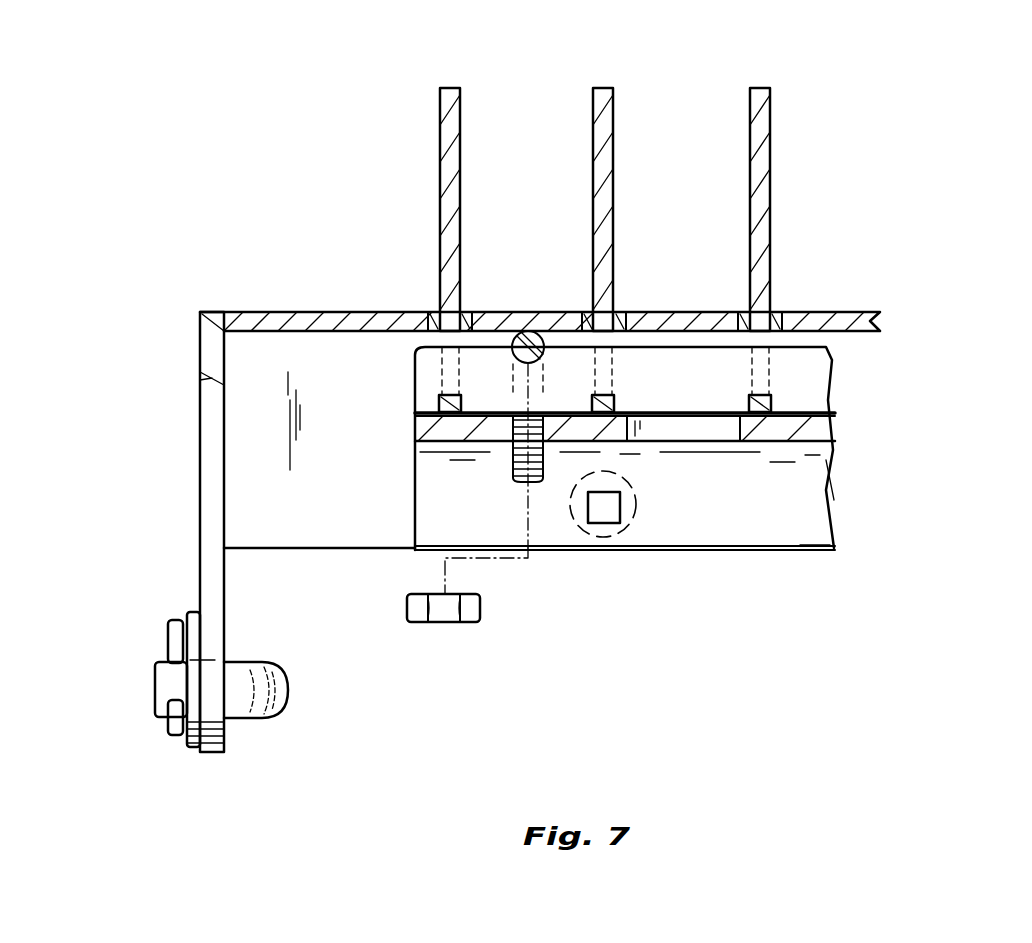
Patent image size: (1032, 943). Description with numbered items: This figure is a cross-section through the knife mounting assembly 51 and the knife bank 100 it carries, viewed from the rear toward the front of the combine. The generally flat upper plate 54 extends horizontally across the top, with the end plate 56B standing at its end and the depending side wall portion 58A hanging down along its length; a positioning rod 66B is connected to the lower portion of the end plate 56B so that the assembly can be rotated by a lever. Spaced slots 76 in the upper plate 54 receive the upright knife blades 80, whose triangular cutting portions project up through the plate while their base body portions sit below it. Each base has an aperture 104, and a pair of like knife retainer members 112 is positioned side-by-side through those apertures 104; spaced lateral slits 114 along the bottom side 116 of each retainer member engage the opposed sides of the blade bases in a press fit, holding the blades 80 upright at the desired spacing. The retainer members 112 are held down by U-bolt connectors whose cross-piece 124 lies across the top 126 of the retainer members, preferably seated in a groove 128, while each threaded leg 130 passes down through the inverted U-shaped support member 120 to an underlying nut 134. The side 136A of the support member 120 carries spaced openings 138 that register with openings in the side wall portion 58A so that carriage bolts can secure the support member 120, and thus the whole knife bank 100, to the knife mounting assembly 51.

The knife mounting assembly 51 is at (196, 326).
The upper plate 54 is at (258, 312).
The end plate 56B is at (198, 514).
The side wall portion 58A is at (290, 552).
The positioning rod 66B is at (286, 712).
The slot 76 is at (470, 312).
The knife blade 80 is at (452, 88).
The knife bank 100 is at (838, 480).
The aperture 104 is at (432, 326).
The knife retainer member 112 is at (412, 362).
The slit 114 is at (436, 418).
The bottom side 116 is at (727, 444).
The support member 120 is at (412, 520).
The cross-piece 124 is at (545, 351).
The top 126 is at (722, 331).
The groove 128 is at (518, 366).
The leg 130 is at (546, 470).
The nut 134 is at (444, 624).
The side 136A is at (812, 524).
The opening 138 is at (620, 507).